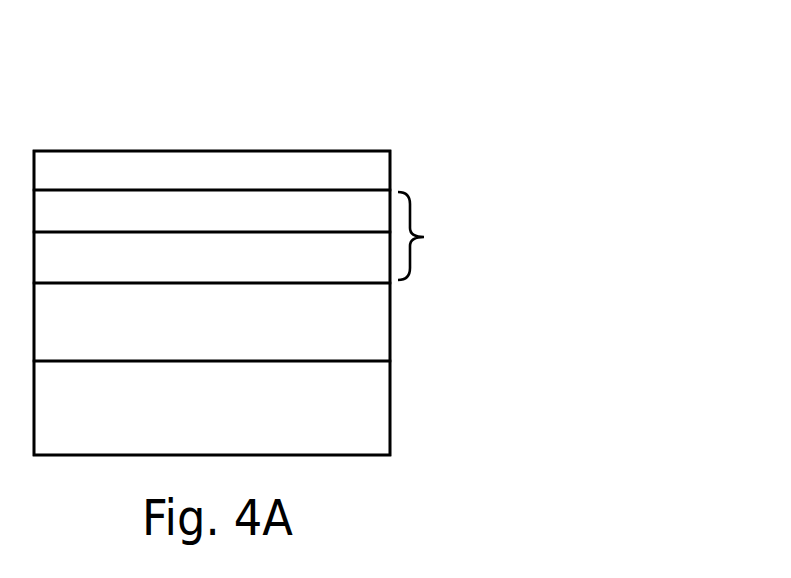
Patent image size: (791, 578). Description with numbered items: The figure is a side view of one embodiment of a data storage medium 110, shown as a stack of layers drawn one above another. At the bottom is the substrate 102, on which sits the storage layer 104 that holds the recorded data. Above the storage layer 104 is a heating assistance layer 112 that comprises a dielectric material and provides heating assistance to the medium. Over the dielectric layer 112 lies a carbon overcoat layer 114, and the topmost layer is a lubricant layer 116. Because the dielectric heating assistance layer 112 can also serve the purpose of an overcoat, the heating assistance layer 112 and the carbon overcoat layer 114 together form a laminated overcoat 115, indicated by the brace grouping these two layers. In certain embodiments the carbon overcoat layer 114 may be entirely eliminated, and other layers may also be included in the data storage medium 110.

The substrate 102 is at (228, 418).
The storage layer 104 is at (228, 338).
The data storage medium 110 is at (536, 102).
The heating assistance layer 112 is at (228, 268).
The carbon overcoat layer 114 is at (228, 224).
The laminated overcoat 115 is at (433, 236).
The lubricant layer 116 is at (228, 186).